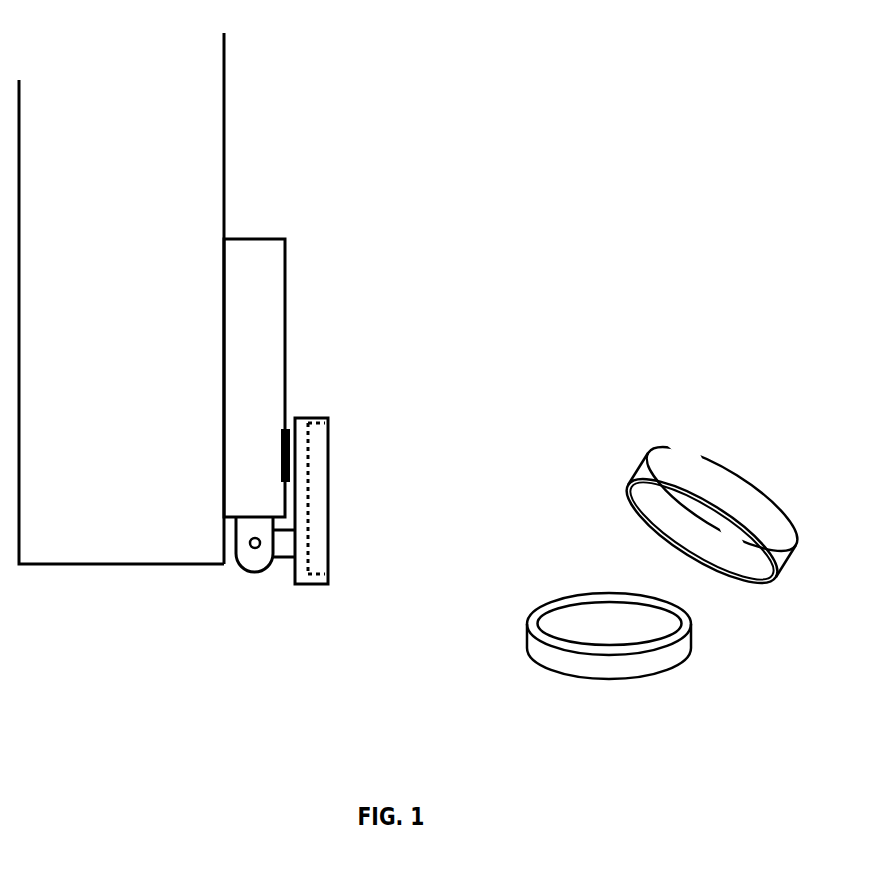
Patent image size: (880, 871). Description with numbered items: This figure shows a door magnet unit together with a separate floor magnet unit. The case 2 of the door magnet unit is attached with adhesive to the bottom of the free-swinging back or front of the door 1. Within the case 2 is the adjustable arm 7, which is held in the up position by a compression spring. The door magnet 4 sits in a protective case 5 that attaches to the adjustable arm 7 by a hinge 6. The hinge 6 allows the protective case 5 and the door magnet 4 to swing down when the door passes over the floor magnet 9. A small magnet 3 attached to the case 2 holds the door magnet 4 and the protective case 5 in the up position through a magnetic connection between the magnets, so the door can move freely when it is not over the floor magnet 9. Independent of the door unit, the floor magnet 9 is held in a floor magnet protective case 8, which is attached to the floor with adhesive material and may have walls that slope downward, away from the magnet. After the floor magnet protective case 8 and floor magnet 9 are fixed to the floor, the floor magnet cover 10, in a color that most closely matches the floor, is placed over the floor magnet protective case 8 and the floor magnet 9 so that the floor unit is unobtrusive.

The door 1 is at (195, 115).
The case 2 is at (262, 290).
The small magnet 3 is at (278, 433).
The door magnet 4 is at (320, 499).
The protective case 5 is at (328, 577).
The hinge 6 is at (251, 548).
The adjustable arm 7 is at (260, 558).
The floor magnet protective case 8 is at (535, 645).
The floor magnet 9 is at (593, 618).
The floor magnet cover 10 is at (665, 465).